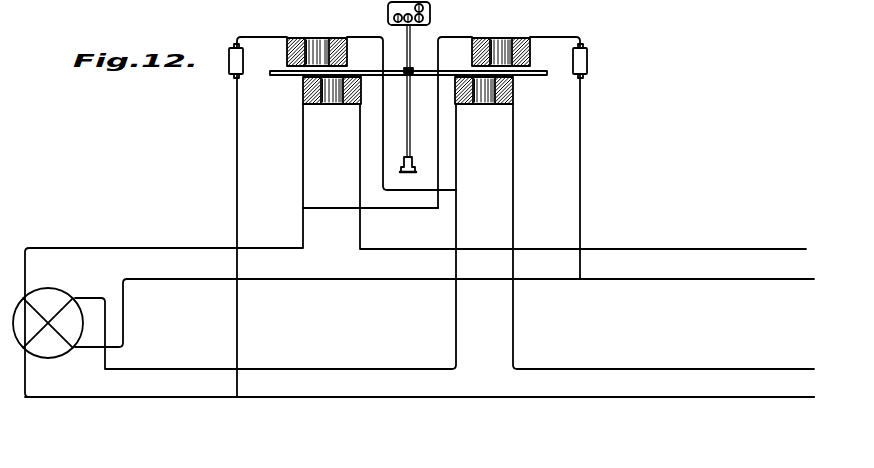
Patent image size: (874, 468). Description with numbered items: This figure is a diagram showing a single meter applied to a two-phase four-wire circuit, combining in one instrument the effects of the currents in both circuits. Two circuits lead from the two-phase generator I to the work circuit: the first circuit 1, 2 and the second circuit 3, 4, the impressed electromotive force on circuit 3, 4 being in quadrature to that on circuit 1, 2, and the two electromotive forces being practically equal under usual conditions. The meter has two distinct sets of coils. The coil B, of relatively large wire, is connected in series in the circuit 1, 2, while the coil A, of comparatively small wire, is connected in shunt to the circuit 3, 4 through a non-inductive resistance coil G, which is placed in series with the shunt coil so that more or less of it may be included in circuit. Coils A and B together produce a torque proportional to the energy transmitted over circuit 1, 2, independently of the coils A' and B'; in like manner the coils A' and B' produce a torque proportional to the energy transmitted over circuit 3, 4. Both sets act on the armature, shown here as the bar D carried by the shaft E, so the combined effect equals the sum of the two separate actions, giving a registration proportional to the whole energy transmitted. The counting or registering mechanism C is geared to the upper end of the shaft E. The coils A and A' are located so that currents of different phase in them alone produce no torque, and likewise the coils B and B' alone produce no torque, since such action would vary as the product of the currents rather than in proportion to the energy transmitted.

The inducing coil A is at (317, 42).
The inducing coil A' is at (501, 42).
The inducing coil B is at (320, 90).
The inducing coil B' is at (494, 90).
The counting or registering mechanism C is at (430, 11).
The armature bar D is at (408, 63).
The shaft E is at (410, 111).
The non-inductive resistance coil G is at (250, 58).
The two-phase generator I is at (48, 312).
The work circuit 1 is at (275, 249).
The work circuit 2 is at (333, 280).
The circuit 3 is at (392, 370).
The circuit 4 is at (458, 398).